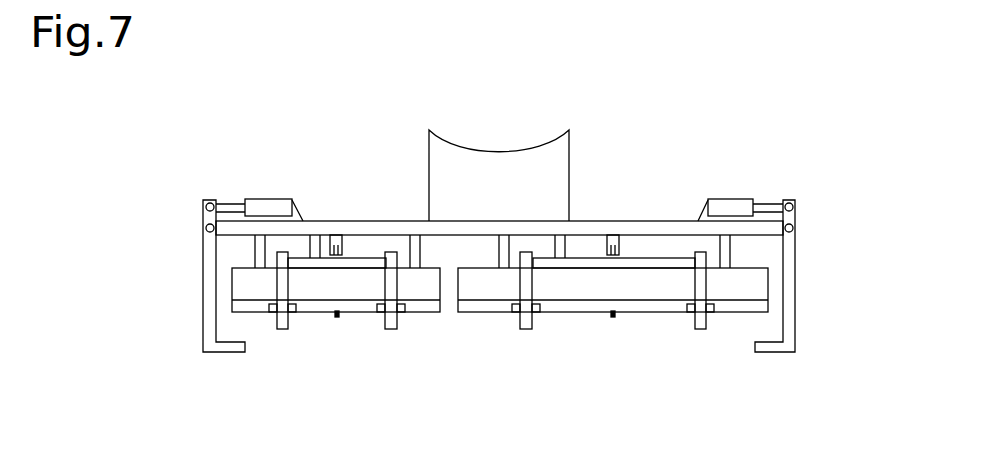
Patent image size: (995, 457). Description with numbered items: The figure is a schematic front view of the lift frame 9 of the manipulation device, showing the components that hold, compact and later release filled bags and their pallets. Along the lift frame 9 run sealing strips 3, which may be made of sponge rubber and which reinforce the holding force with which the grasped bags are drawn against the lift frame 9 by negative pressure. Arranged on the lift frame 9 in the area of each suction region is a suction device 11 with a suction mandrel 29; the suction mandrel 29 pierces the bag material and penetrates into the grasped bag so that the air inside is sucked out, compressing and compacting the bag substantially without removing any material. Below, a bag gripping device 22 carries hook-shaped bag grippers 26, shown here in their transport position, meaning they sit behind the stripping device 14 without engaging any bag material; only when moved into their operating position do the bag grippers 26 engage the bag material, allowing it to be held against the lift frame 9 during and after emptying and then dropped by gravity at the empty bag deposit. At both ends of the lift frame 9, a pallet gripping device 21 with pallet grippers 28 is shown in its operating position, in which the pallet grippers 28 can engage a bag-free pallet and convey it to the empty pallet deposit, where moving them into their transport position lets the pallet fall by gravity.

The lift frame 9 is at (696, 138).
The suction device 11 is at (317, 252).
The stripping device 14 is at (270, 314).
The pallet gripping device 21 is at (252, 186).
The bag gripping device 22 is at (374, 243).
The bag gripper 26 is at (280, 322).
The pallet gripper 28 is at (210, 270).
The suction mandrel 29 is at (338, 317).
The sealing strip 3 is at (250, 305).